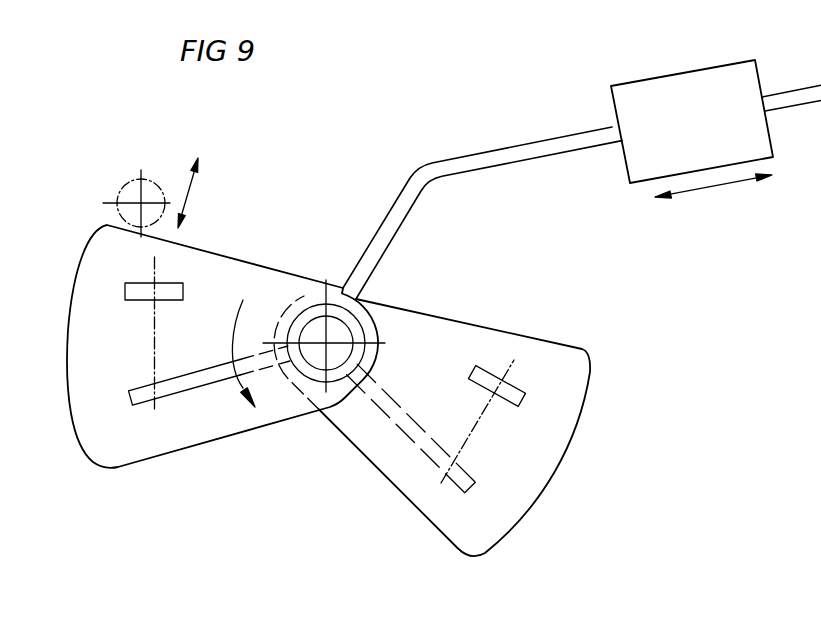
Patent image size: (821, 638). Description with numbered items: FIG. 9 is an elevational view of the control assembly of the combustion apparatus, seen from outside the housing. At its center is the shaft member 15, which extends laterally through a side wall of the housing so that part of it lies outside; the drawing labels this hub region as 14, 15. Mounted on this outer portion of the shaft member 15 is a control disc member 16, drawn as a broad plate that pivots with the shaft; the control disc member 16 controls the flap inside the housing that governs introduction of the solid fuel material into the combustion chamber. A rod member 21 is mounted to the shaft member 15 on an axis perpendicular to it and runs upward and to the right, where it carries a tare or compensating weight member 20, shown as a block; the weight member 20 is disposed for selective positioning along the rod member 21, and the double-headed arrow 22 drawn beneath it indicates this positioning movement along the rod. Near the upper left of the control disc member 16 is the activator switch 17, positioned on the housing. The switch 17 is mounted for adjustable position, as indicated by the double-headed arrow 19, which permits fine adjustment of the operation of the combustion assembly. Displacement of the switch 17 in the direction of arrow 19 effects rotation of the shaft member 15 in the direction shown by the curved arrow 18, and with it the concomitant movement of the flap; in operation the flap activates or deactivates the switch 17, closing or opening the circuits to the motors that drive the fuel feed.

The hub shaft 14 is at (319, 330).
The shaft member 15 is at (326, 290).
The control disc member 16 is at (192, 430).
The activator switch 17 is at (135, 190).
The arrow 18 is at (238, 354).
The arrow 19 is at (189, 193).
The tare or compensating weight member 20 is at (692, 83).
The rod member 21 is at (510, 147).
The stroke direction arrow 22 is at (713, 188).